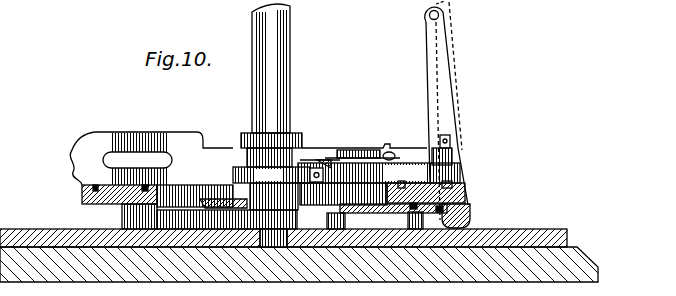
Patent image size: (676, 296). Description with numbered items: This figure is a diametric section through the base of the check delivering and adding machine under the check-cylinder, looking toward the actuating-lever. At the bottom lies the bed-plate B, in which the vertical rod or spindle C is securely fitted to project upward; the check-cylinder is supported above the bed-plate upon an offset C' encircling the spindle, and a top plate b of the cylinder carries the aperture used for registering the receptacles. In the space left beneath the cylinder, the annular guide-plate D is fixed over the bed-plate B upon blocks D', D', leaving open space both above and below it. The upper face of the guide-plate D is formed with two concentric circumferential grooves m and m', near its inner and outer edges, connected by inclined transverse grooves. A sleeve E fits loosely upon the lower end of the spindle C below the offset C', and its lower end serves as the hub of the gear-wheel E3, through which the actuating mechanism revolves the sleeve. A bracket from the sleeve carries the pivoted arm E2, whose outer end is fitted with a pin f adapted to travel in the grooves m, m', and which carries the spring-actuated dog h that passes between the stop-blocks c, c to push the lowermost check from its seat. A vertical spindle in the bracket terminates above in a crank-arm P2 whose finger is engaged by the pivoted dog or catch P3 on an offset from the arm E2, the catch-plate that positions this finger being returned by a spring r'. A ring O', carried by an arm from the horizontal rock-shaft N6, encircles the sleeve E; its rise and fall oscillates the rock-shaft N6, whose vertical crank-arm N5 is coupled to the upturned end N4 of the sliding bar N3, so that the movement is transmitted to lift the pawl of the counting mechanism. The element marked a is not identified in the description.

The bed-plate B is at (52, 229).
The stop-blocks c is at (136, 152).
The annular guide-plate D is at (272, 193).
The blocks D' is at (253, 216).
The outer circumferential groove m' is at (268, 217).
The inner circumferential groove m is at (286, 209).
The gear-wheel E3 is at (296, 212).
The annular plate or ring O' is at (248, 241).
The vertical rod or spindle C is at (279, 68).
The offset C' is at (261, 138).
The sleeve E is at (271, 188).
The pivoted arm E2 is at (379, 184).
The pivoted dog or catch P3 is at (314, 160).
The crank-arm P2 is at (331, 158).
The spring r' is at (362, 148).
The stop a is at (396, 156).
The spring-actuated dog or tooth h is at (458, 130).
The sliding bar N3 is at (401, 148).
The upturned end of sliding bar N4 is at (427, 90).
The vertical crank-arm N5 is at (447, 78).
The pin f is at (462, 183).
The horizontal rock-shaft N6 is at (470, 218).
The top plate of cylinder b is at (346, 220).